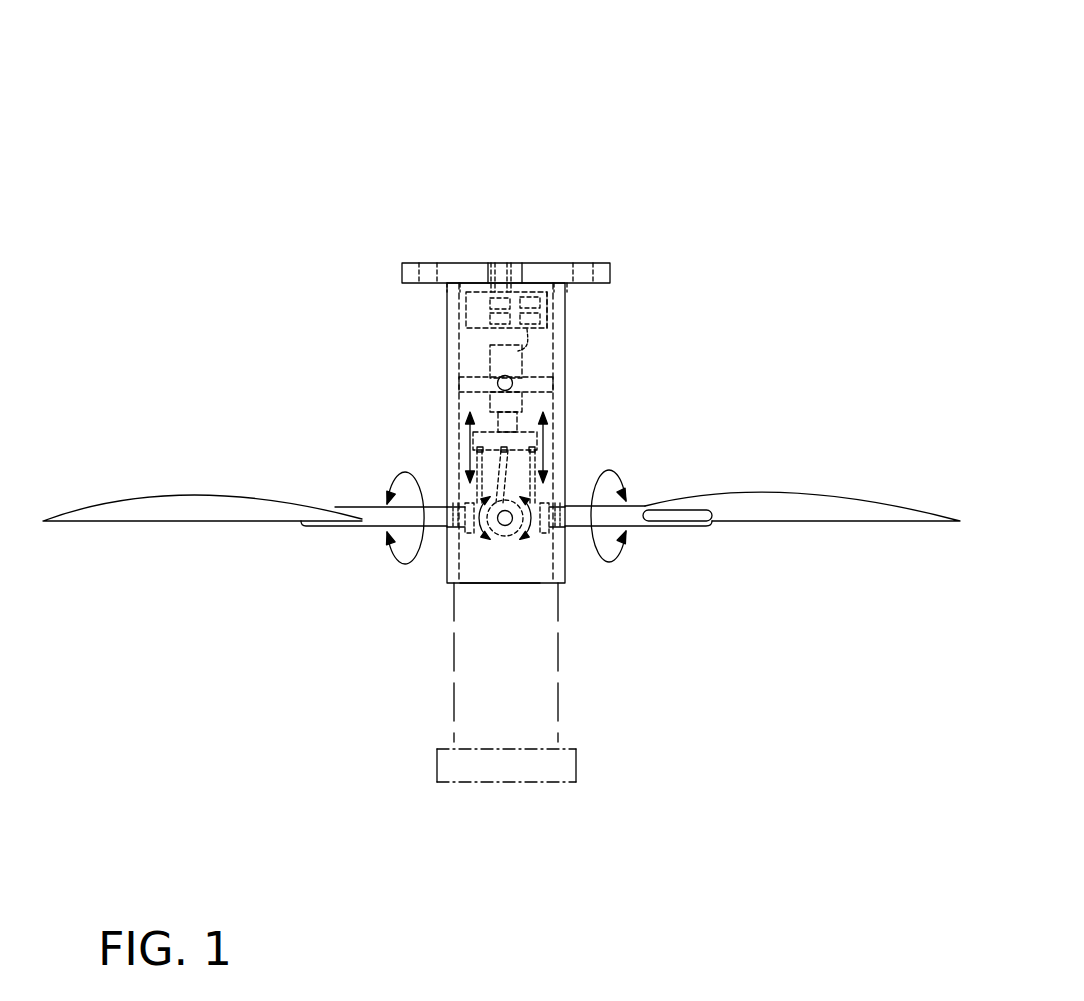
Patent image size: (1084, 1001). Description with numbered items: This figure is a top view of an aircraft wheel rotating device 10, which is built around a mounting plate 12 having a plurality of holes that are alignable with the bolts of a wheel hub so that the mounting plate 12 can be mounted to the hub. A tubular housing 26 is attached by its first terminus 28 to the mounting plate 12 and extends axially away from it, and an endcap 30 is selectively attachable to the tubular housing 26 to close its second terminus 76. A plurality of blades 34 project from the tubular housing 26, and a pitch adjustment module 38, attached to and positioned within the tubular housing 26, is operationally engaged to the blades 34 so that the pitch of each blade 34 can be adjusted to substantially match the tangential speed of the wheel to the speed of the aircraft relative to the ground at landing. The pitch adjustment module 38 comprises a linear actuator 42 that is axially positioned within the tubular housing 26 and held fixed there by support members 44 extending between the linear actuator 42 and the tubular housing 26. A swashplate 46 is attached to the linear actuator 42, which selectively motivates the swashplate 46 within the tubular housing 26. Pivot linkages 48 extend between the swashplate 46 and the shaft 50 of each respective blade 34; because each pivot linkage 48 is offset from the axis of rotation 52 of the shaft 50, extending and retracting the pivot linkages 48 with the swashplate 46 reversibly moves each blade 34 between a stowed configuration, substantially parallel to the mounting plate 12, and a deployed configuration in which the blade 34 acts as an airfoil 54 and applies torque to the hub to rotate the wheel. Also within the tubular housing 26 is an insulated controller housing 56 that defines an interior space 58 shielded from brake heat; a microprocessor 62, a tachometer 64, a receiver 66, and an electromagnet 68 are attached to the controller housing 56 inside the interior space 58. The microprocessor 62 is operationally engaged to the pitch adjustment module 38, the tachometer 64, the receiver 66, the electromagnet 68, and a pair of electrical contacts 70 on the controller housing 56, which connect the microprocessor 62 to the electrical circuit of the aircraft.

The aircraft wheel rotating device 10 is at (662, 89).
The mounting plate 12 is at (610, 270).
The tubular housing 26 is at (572, 570).
The first terminus 28 is at (473, 275).
The endcap 30 is at (581, 765).
The blades 34 is at (228, 531).
The pitch adjustment module 38 is at (542, 485).
The linear actuator 42 is at (498, 352).
The support members 44 is at (477, 383).
The swashplate 46 is at (474, 433).
The pivot linkages 48 is at (565, 492).
The shaft 50 is at (439, 521).
The axis of rotation 52 is at (636, 510).
The airfoil 54 is at (853, 515).
The controller housing 56 is at (552, 298).
The interior space 58 is at (473, 297).
The microprocessor 62 is at (550, 308).
The tachometer 64 is at (550, 325).
The receiver 66 is at (492, 305).
The electromagnet 68 is at (492, 318).
The electrical contacts 70 is at (498, 258).
The second terminus 76 is at (483, 588).